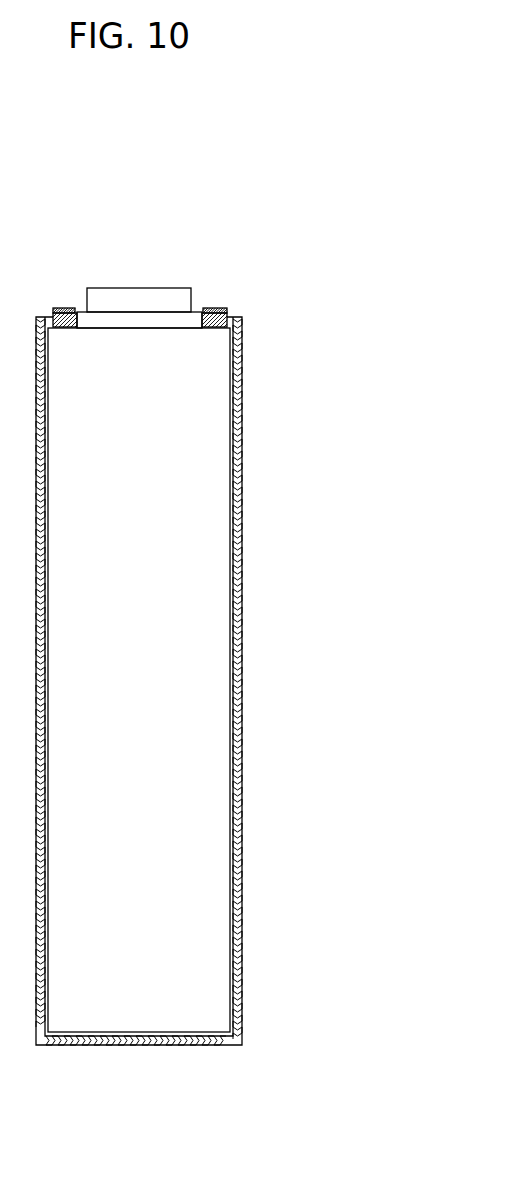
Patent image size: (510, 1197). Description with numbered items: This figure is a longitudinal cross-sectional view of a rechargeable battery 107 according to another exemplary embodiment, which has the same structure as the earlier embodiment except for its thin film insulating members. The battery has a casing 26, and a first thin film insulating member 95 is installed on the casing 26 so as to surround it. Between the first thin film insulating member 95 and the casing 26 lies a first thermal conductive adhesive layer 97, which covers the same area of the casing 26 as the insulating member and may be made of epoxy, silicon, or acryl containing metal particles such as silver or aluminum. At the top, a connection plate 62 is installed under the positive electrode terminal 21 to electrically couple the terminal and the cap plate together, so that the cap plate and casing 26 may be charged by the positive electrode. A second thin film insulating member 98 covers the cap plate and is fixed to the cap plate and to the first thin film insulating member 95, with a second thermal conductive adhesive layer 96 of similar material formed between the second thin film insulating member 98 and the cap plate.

The rechargeable battery 107 is at (156, 187).
The first thin film insulating member 95 is at (242, 527).
The first thermal conductive adhesive layer 97 is at (235, 583).
The casing 26 is at (203, 705).
The positive electrode terminal 21 is at (158, 298).
The connection plate 62 is at (123, 322).
The second thin film insulating member 98 is at (210, 307).
The second thermal conductive adhesive layer 96 is at (229, 313).